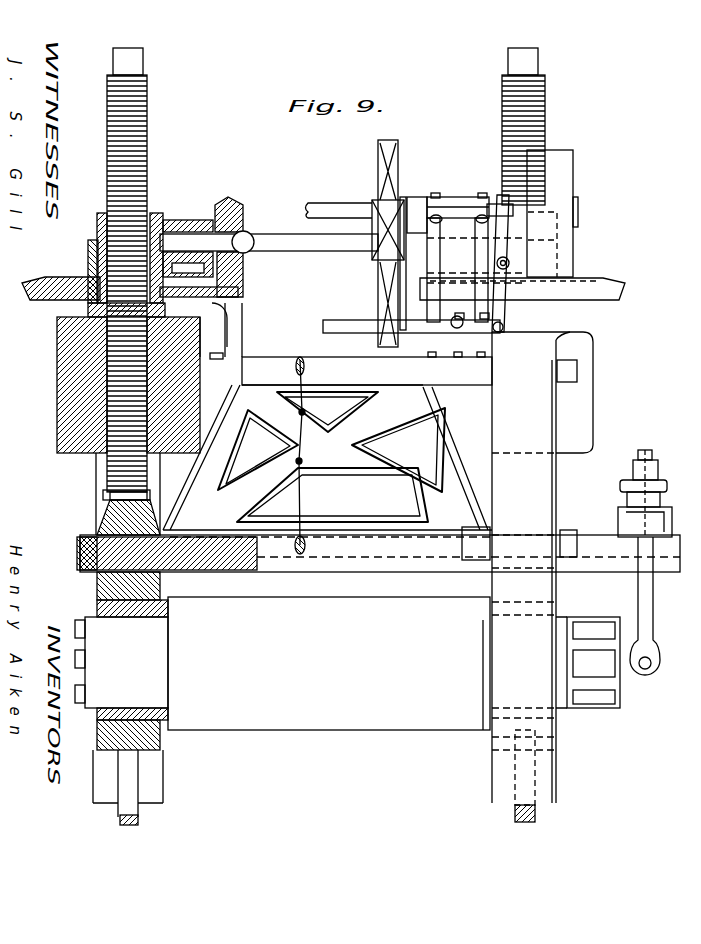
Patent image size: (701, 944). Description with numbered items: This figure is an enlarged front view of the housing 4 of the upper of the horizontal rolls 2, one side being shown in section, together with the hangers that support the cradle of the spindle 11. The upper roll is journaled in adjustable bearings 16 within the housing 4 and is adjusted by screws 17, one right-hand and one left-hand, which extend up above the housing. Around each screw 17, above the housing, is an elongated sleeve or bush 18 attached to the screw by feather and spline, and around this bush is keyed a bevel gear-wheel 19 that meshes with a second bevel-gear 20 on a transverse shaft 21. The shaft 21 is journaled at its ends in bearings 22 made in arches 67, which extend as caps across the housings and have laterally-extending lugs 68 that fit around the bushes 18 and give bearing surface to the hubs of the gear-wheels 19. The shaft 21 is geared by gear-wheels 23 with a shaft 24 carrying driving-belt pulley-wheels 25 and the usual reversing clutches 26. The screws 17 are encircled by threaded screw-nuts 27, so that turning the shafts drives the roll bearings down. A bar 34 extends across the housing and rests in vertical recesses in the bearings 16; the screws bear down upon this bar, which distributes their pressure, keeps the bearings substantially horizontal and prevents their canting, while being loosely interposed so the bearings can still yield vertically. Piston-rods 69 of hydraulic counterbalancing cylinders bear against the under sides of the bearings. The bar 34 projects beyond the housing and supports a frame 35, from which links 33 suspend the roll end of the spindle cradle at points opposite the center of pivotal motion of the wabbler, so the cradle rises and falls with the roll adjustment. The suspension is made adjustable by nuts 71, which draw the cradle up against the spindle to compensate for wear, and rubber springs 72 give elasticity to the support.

The horizontal roll 2 is at (347, 663).
The housing 4 is at (57, 383).
The spindle 11 is at (150, 497).
The adjustable bearing 16 is at (97, 591).
The adjusting screw 17 is at (147, 130).
The sleeve or bush 18 is at (97, 224).
The bevel gear-wheel 19 is at (40, 283).
The bevel-gear 20 is at (233, 198).
The transverse shaft 21 is at (269, 242).
The bearing 22 is at (196, 213).
The gear-wheel 23 is at (378, 202).
The shaft 24 is at (339, 211).
The driving-belt pulley-wheel 25 is at (552, 213).
The reversing clutch 26 is at (500, 196).
The screw-nut 27 is at (97, 458).
The link 33 is at (646, 608).
The bar 34 is at (80, 560).
The frame 35 is at (665, 520).
The arch 67 is at (222, 268).
The laterally-extending lug 68 is at (88, 254).
The piston-rod 69 is at (515, 810).
The nut 71 is at (656, 470).
The rubber spring 72 is at (660, 497).